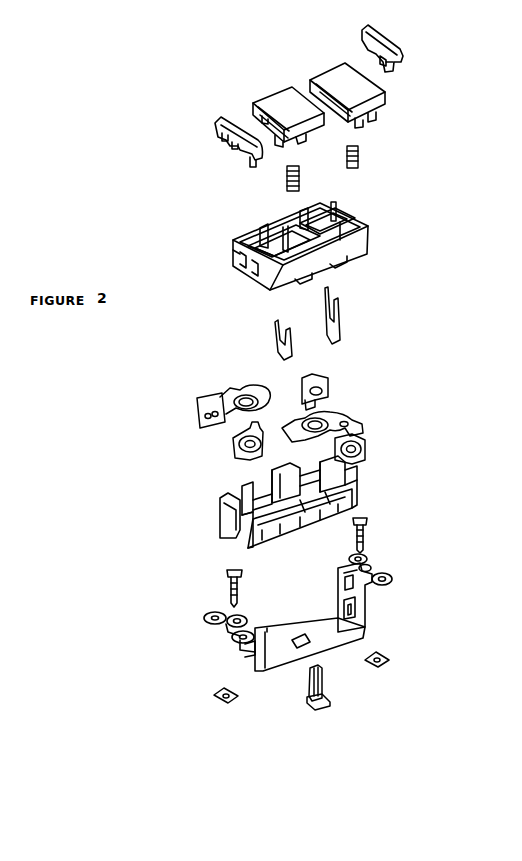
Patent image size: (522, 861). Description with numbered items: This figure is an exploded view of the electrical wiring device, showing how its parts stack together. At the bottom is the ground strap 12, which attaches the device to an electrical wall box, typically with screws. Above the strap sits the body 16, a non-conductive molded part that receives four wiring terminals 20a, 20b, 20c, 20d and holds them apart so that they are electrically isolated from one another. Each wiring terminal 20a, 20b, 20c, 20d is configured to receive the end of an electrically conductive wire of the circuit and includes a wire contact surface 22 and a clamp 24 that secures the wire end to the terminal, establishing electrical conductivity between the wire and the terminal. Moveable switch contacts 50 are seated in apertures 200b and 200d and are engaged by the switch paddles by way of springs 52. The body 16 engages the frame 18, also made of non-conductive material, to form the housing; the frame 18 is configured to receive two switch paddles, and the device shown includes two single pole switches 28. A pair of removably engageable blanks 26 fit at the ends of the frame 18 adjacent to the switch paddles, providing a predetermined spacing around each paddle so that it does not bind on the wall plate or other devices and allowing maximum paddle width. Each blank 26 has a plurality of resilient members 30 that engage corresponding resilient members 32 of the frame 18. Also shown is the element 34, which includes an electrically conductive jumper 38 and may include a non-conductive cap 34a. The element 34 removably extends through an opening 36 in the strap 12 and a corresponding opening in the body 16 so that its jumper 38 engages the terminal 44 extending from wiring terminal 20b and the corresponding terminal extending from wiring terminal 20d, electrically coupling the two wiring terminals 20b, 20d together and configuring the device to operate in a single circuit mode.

The ground strap 12 is at (393, 578).
The body 16 is at (356, 503).
The frame 18 is at (372, 236).
The wiring terminal 20a is at (238, 432).
The wiring terminal 20b is at (200, 406).
The wiring terminal 20c is at (328, 380).
The wiring terminal 20d is at (344, 418).
The aperture 200b is at (245, 398).
The aperture 200d is at (318, 420).
The wire contact surface 22 is at (362, 428).
The clamp 24 is at (246, 458).
The blank 26 is at (212, 122).
The single pole switch 28 is at (278, 96).
The resilient member 30 is at (375, 58).
The resilient member 32 is at (334, 205).
The element 34 is at (305, 721).
The non-conductive cap 34a is at (331, 704).
The opening 36 is at (303, 637).
The electrically conductive jumper 38 is at (322, 680).
The terminal 44 is at (293, 443).
The moveable switch contact 50 is at (287, 327).
The spring 52 is at (346, 158).